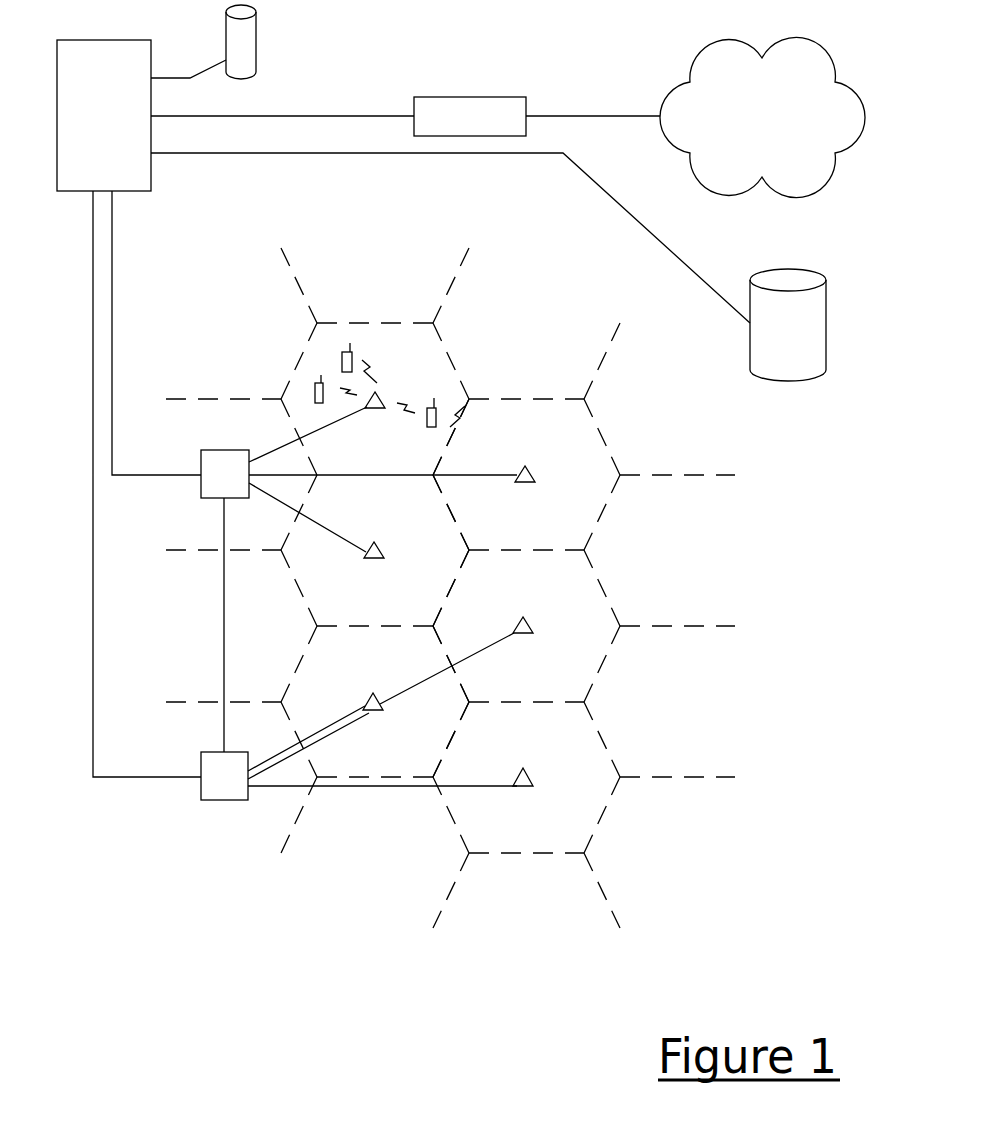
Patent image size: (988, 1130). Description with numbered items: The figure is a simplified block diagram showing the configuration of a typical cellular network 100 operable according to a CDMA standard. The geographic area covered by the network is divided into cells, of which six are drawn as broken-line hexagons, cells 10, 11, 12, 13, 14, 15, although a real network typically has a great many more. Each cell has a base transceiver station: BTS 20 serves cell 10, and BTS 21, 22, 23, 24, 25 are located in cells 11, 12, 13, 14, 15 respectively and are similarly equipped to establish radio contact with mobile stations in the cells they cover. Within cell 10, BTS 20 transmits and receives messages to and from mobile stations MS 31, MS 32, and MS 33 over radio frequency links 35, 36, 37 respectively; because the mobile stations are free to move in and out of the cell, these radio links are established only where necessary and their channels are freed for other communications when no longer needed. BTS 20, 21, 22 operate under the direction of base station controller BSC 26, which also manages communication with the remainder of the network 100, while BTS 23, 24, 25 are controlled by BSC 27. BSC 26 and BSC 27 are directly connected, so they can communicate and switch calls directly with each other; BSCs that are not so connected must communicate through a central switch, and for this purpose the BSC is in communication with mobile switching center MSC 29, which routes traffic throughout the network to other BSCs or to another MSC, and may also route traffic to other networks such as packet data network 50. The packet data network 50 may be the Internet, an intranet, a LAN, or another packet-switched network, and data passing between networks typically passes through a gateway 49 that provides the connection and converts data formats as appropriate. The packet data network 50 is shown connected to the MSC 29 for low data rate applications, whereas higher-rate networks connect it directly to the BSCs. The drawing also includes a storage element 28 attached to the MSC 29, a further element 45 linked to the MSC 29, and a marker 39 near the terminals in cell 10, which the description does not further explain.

The cell 10 is at (384, 328).
The cell 11 is at (300, 572).
The cell 12 is at (600, 434).
The cell 13 is at (305, 656).
The cell 14 is at (601, 592).
The cell 15 is at (601, 744).
The base transceiver station 20 is at (378, 392).
The base transceiver station 21 is at (384, 553).
The base transceiver station 22 is at (535, 481).
The base transceiver station 23 is at (382, 707).
The base transceiver station 24 is at (527, 625).
The base transceiver station 25 is at (533, 778).
The base station controller 26 is at (210, 450).
The base station controller 27 is at (208, 752).
The database 28 is at (226, 22).
The mobile switching center 29 is at (75, 40).
The mobile station 31 is at (313, 392).
The mobile station 32 is at (350, 347).
The mobile station 33 is at (437, 404).
The radio frequency link 35 is at (340, 388).
The radio frequency link 36 is at (364, 361).
The radio frequency link 37 is at (412, 416).
The wireless link 39 is at (468, 431).
The database server 45 is at (826, 302).
The gateway 49 is at (465, 97).
The packet data network 50 is at (815, 48).
The cellular network 100 is at (314, 906).